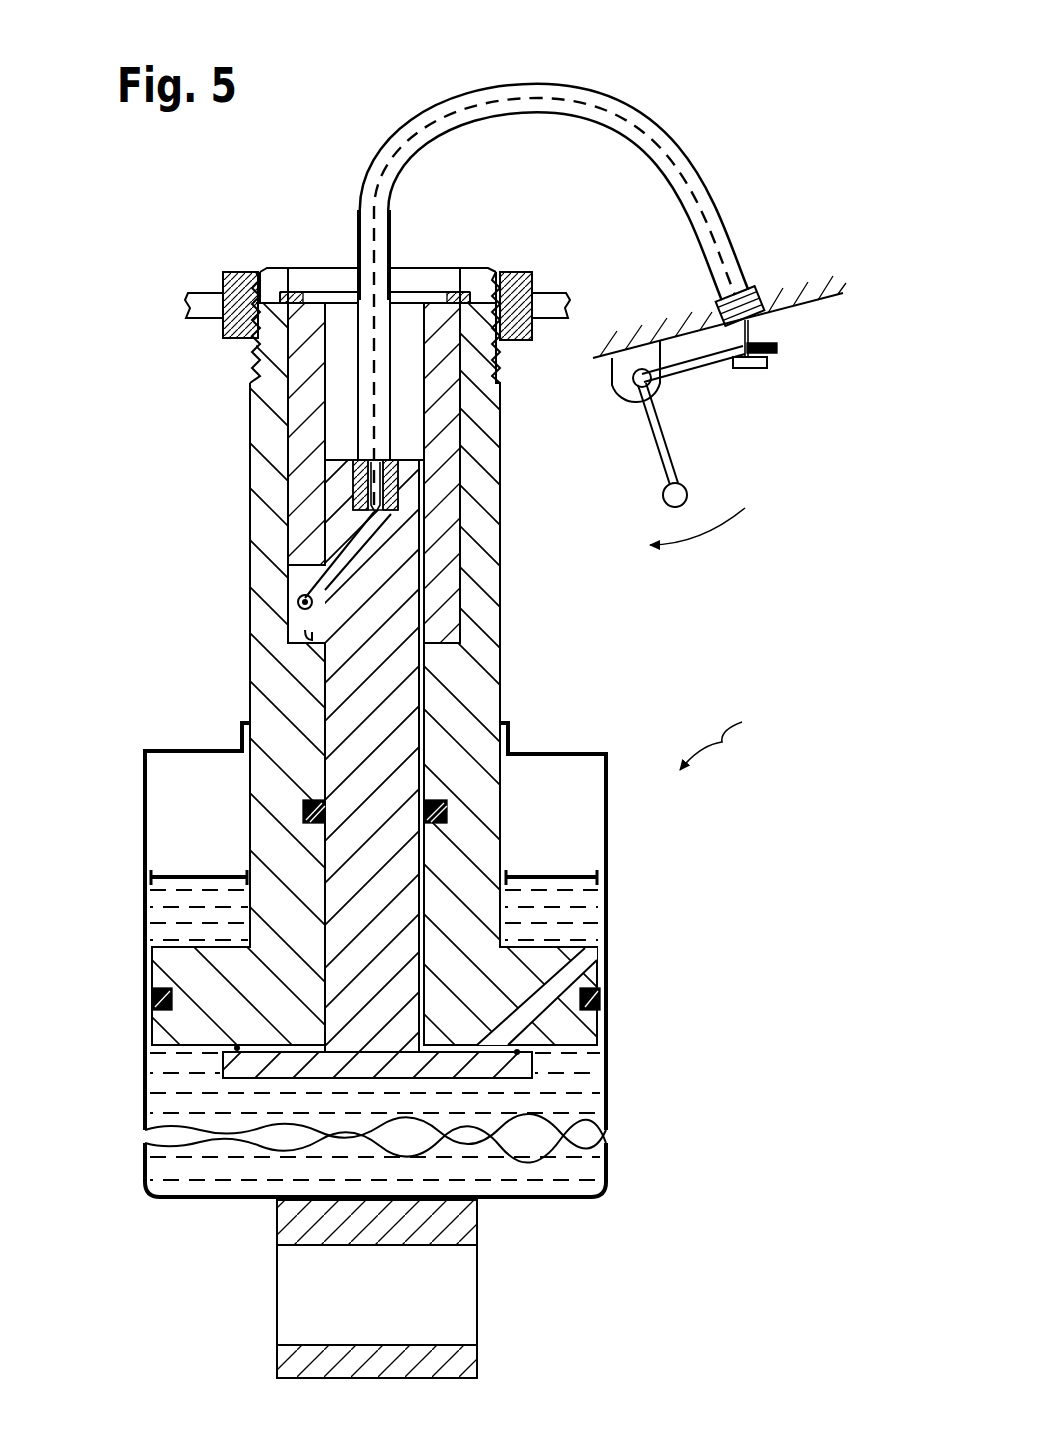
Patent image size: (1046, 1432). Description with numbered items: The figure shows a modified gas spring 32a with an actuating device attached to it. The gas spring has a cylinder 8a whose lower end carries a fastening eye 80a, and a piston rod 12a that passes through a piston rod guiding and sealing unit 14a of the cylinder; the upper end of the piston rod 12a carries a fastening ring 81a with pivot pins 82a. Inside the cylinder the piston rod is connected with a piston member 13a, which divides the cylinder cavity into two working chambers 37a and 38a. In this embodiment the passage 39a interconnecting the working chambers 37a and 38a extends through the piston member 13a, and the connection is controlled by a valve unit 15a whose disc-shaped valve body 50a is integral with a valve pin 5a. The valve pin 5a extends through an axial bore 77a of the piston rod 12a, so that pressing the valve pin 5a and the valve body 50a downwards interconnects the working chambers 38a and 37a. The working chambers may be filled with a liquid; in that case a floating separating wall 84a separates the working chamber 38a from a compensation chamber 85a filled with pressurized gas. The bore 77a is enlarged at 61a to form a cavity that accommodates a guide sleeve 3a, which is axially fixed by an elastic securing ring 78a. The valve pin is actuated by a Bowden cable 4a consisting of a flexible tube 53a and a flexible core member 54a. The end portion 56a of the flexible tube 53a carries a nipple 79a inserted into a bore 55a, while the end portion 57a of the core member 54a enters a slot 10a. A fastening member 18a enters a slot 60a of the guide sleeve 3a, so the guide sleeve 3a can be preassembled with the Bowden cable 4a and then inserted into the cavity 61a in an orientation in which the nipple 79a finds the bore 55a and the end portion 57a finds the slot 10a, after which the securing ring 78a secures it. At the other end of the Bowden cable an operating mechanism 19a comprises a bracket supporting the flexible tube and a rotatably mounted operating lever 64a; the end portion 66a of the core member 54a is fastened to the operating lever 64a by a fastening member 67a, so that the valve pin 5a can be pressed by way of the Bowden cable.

The flexible tube 53a is at (670, 56).
The Bowden cable 4a is at (707, 150).
The core member 54a is at (725, 218).
The fastening ring 81a is at (240, 270).
The elastic securing ring 78a is at (300, 298).
The pivot pins 82a is at (195, 300).
The end portion of the flexible tube 56a is at (357, 430).
The cavity 61a is at (287, 440).
The bore 55a is at (350, 470).
The slot 10a is at (340, 515).
The end portion of the core member 57a is at (340, 545).
The fastening member 18a is at (300, 603).
The slot of the guide sleeve 60a is at (307, 643).
The valve pin 5a is at (357, 715).
The nipple 79a is at (410, 473).
The guide sleeve 3a is at (450, 565).
The piston rod 12a is at (482, 668).
The piston rod guiding and sealing unit 14a is at (507, 732).
The gas spring 32a is at (741, 735).
The axial bore 77a is at (410, 780).
The cylinder 8a is at (612, 836).
The compensation chamber 85a is at (173, 813).
The floating separating wall 84a is at (183, 866).
The working chamber 38a is at (577, 918).
The valve unit 15a is at (255, 982).
The passage 39a is at (553, 973).
The piston member 13a is at (188, 1035).
The valve body 50a is at (510, 1067).
The working chamber 37a is at (580, 1110).
The fastening eye 80a is at (478, 1265).
The end portion of the core member 66a is at (752, 330).
The fastening member 67a is at (760, 367).
The operating mechanism 19a is at (612, 385).
The operating lever 64a is at (668, 450).